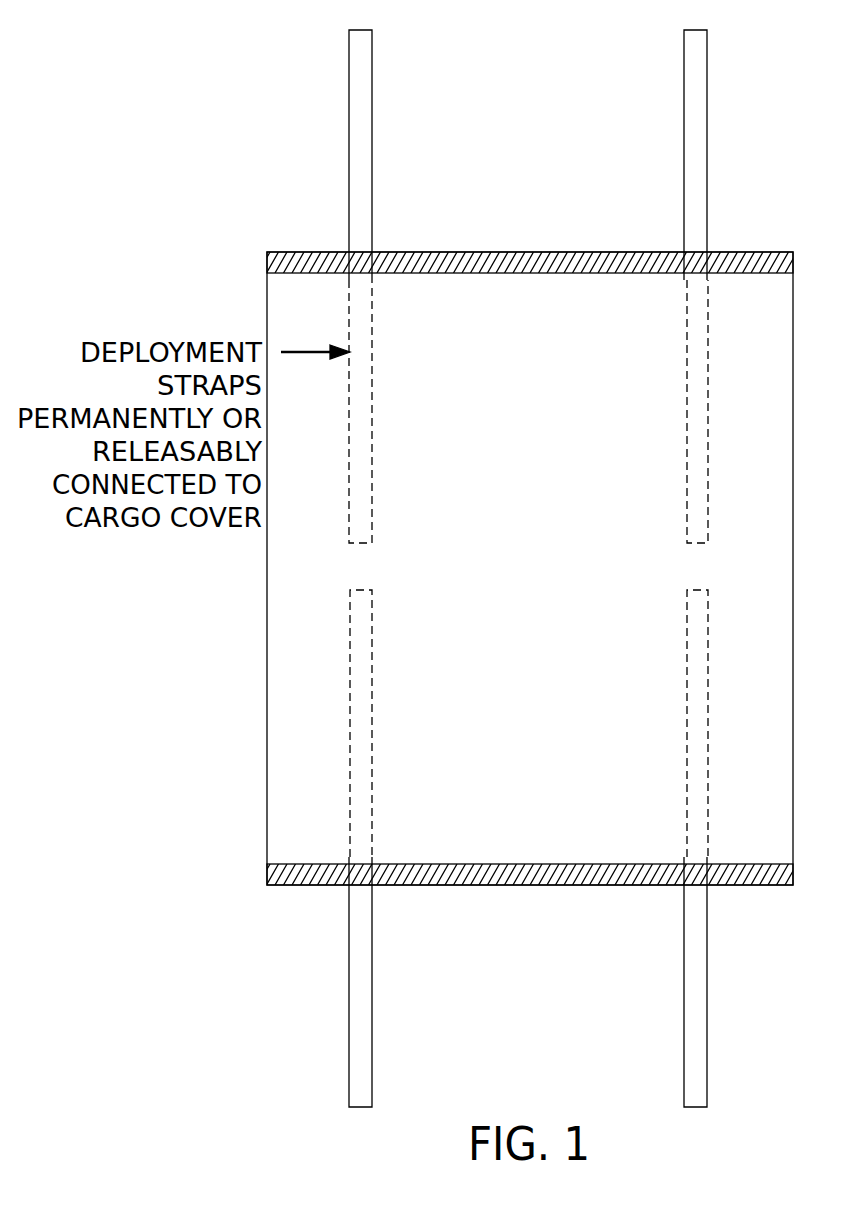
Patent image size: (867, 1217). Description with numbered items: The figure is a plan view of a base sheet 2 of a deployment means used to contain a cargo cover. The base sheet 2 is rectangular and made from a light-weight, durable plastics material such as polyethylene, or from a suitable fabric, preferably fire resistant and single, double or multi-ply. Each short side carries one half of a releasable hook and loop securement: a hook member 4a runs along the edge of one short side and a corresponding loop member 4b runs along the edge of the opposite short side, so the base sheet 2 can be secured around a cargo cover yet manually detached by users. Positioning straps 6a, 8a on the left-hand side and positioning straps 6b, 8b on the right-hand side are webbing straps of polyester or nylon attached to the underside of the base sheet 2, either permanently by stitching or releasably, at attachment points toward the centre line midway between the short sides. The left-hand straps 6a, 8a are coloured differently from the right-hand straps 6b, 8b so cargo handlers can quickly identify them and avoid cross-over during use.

The base sheet 2 is at (810, 148).
The hook member 4a is at (284, 252).
The loop member 4b is at (285, 886).
The positioning strap 6a is at (349, 43).
The positioning strap 6b is at (707, 46).
The positioning strap 8a is at (349, 1096).
The positioning strap 8b is at (707, 1090).